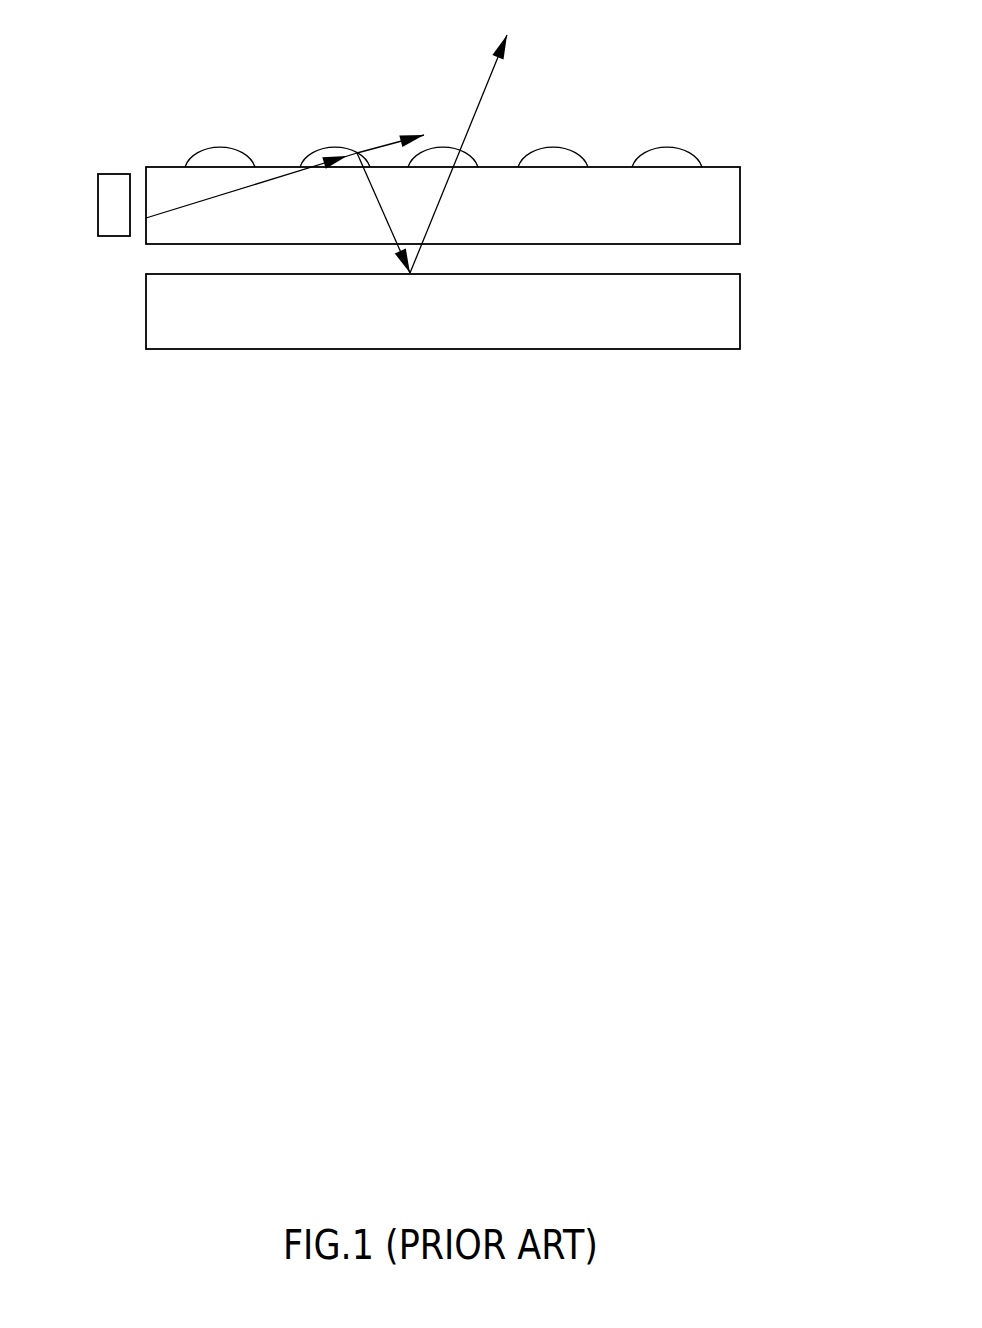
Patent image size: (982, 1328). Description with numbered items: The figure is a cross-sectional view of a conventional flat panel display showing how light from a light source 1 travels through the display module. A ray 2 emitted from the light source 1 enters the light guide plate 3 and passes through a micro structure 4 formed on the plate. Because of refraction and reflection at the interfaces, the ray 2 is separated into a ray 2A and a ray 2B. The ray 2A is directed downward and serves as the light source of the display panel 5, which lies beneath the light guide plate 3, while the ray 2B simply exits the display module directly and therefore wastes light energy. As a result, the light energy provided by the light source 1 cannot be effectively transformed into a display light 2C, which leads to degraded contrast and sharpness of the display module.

The light source 1 is at (98, 198).
The ray 2 is at (251, 188).
The ray 2A is at (389, 213).
The ray 2B is at (390, 131).
The display light 2C is at (471, 140).
The light guide plate 3 is at (740, 196).
The micro structure 4 is at (219, 148).
The display panel 5 is at (740, 310).